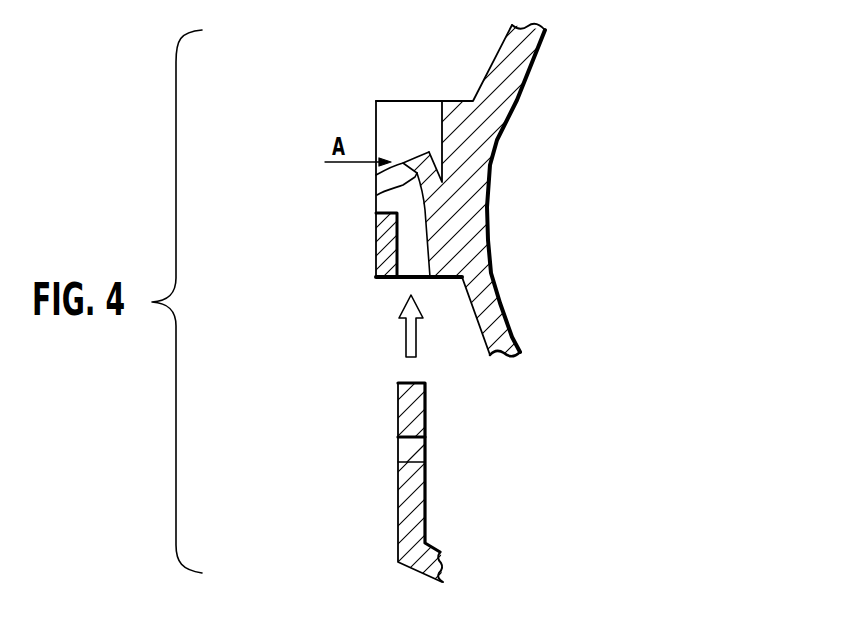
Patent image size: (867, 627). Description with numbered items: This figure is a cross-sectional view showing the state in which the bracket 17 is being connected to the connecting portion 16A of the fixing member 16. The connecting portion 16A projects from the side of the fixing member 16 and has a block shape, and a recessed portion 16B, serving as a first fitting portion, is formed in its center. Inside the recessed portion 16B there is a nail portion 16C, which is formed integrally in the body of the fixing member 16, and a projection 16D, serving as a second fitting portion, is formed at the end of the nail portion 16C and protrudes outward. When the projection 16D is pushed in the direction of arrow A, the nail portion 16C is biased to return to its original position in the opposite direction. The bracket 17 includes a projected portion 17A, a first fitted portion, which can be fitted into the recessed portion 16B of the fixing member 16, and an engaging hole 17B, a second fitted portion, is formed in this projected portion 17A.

The fixing member 16 is at (487, 57).
The connecting portion 16A is at (376, 250).
The recessed portion 16B is at (388, 123).
The nail portion 16C is at (377, 195).
The projection 16D is at (376, 175).
The bracket 17 is at (398, 527).
The projected portion 17A is at (398, 412).
The engaging hole 17B is at (413, 462).